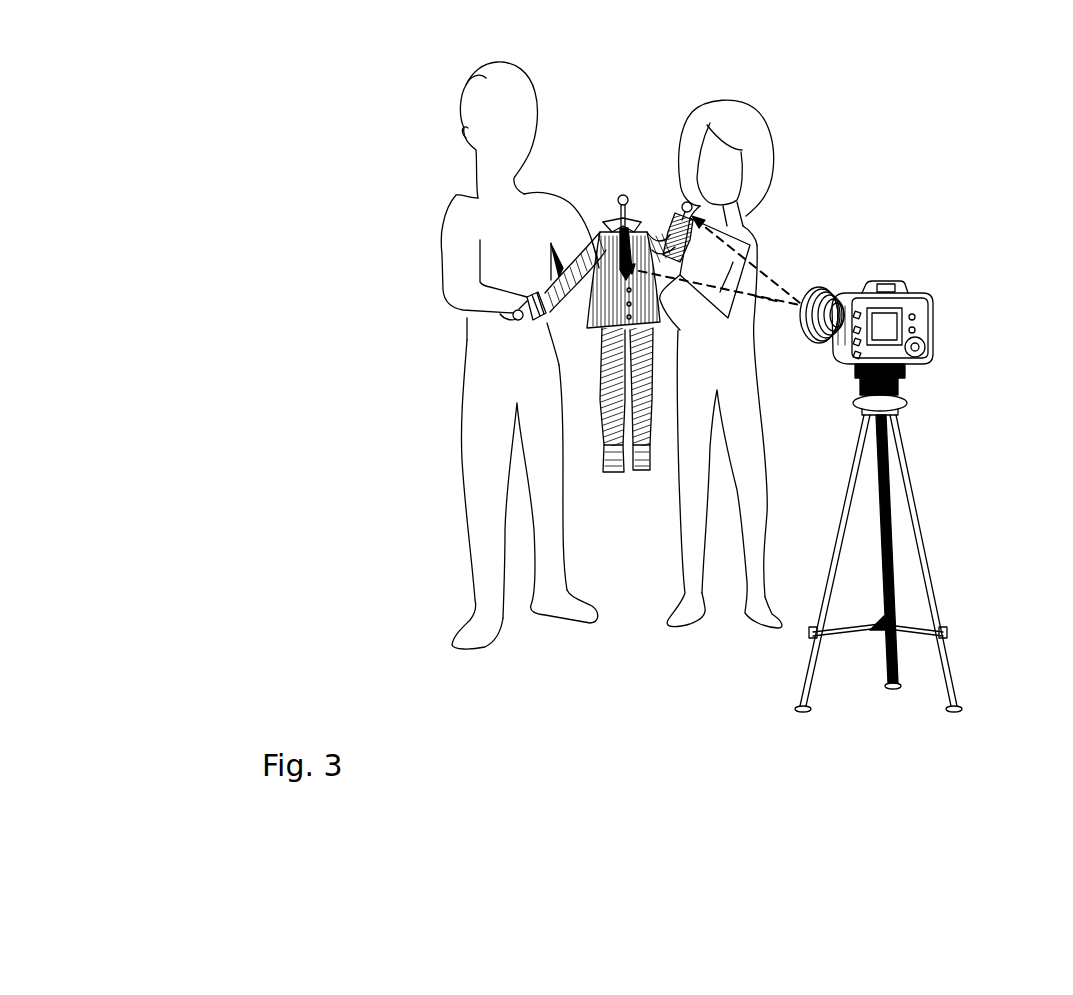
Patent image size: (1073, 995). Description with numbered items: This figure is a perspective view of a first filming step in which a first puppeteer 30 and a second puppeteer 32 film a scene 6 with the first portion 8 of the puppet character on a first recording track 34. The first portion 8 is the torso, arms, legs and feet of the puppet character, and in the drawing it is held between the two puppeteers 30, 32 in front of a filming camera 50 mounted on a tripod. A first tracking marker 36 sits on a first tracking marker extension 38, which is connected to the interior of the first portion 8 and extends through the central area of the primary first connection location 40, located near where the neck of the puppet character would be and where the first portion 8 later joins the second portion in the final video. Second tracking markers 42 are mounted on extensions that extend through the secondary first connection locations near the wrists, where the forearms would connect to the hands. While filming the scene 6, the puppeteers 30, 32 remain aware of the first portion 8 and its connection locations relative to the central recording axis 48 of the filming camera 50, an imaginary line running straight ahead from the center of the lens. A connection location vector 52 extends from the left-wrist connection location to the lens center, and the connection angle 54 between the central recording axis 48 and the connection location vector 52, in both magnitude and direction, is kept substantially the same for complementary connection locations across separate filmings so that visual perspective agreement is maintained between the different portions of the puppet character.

The scene 6 is at (922, 90).
The first portion of the puppet character 8 is at (612, 339).
The first puppeteer 30 is at (472, 186).
The second puppeteer 32 is at (752, 232).
The first recording track 34 is at (913, 488).
The first tracking marker 36 is at (618, 197).
The first tracking marker extension 38 is at (633, 212).
The primary first connection location 40 is at (604, 210).
The second tracking markers 42 is at (521, 319).
The central recording axis 48 is at (677, 278).
The filming camera 50 is at (934, 317).
The connection location vector 52 is at (770, 277).
The connection angle 54 is at (763, 306).